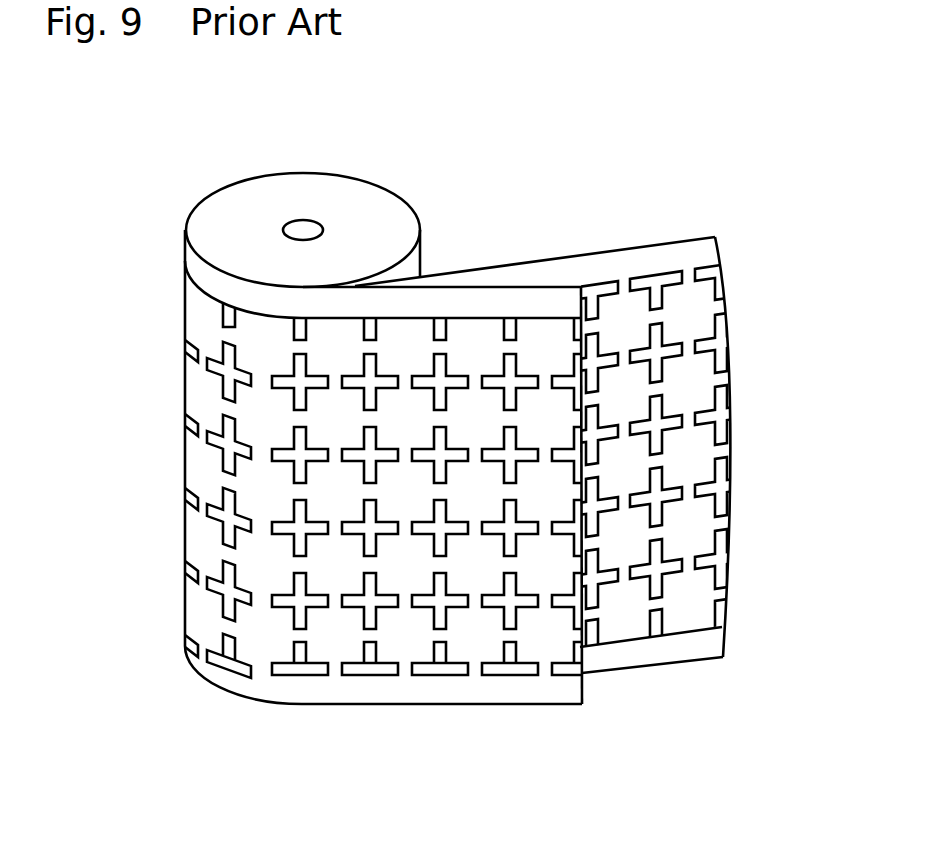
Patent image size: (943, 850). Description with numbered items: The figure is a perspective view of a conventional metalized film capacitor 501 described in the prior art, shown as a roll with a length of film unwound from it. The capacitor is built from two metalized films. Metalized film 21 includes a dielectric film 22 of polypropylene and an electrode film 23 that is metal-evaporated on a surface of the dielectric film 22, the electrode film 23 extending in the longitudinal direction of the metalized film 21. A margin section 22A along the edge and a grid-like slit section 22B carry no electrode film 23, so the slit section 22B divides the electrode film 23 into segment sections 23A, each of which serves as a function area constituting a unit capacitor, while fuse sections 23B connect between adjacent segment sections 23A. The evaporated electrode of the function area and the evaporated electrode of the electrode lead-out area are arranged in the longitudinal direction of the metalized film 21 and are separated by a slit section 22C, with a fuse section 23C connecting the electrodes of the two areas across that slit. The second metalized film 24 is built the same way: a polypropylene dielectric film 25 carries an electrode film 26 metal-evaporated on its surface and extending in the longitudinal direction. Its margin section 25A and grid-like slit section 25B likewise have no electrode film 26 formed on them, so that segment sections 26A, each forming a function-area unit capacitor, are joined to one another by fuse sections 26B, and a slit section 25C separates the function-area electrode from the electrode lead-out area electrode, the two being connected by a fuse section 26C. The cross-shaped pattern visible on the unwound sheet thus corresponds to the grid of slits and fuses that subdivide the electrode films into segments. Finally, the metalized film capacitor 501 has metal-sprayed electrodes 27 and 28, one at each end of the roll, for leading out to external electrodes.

The metalized film capacitor 501 is at (663, 128).
The metal-sprayed electrode 27 is at (315, 190).
The metal-sprayed electrode 28 is at (325, 705).
The margin section 25A is at (197, 265).
The grid-like slit section 25B is at (230, 372).
The slit section 25C is at (215, 653).
The segment section 26A is at (202, 398).
The fuse section 26B is at (230, 478).
The fuse section 26C is at (260, 665).
The metalized film 24 is at (513, 777).
The dielectric film 25 is at (435, 702).
The electrode film 26 is at (488, 678).
The metalized film 21 is at (790, 372).
The dielectric film 22 is at (702, 390).
The electrode film 23 is at (702, 463).
The margin section 22A is at (662, 653).
The grid-like slit section 22B is at (655, 342).
The slit section 22C is at (703, 270).
The segment section 23A is at (695, 528).
The fuse section 23B is at (690, 567).
The fuse section 23C is at (622, 285).